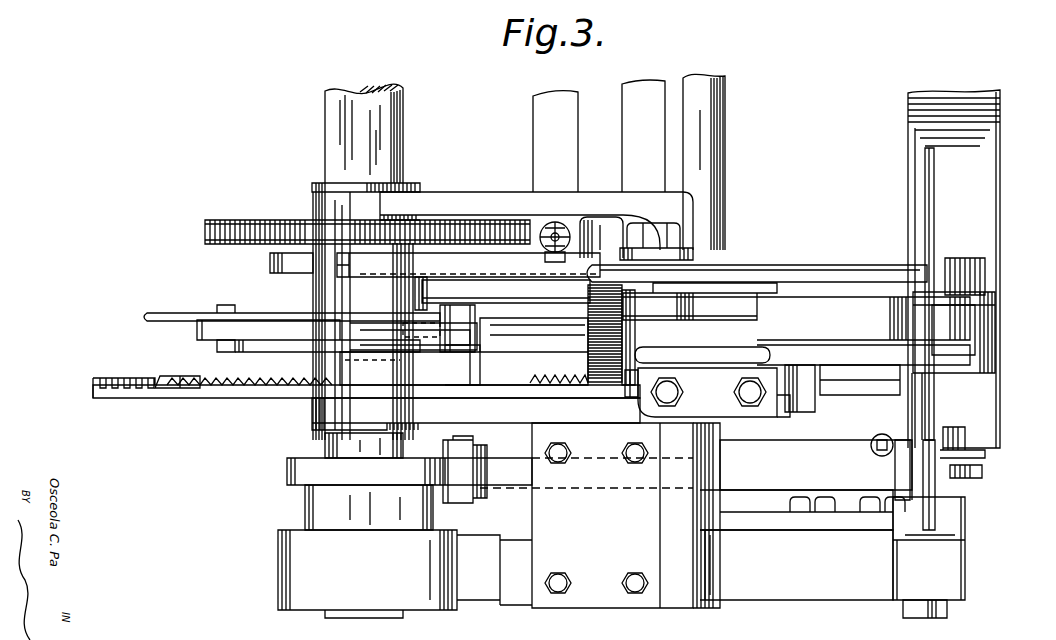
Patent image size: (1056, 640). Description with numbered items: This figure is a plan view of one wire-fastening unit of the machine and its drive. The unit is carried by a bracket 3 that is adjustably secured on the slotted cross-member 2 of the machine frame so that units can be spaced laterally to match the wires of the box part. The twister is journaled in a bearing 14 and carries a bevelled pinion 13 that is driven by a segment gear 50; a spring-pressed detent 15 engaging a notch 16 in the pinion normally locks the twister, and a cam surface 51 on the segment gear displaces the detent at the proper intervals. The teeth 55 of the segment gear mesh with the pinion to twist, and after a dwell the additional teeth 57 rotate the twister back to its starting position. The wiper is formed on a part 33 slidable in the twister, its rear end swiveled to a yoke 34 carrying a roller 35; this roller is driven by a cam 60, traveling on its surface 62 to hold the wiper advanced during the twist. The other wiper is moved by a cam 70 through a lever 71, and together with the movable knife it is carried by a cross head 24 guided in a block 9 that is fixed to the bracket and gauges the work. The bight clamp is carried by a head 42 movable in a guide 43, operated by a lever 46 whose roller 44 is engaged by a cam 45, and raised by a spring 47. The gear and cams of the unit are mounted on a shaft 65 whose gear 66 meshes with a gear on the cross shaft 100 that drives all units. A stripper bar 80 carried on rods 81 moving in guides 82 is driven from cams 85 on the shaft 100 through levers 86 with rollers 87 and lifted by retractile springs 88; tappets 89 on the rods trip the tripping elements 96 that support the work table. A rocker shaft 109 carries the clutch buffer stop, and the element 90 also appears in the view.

The slotted cross-member 2 is at (540, 111).
The bracket 3 is at (468, 202).
The block 9 is at (815, 413).
The bevelled pinion 13 is at (588, 328).
The bearing 14 is at (714, 300).
The spring-pressed detent 15 is at (626, 400).
The notch 16 is at (636, 352).
The cross head 24 is at (862, 378).
The part 33 is at (514, 345).
The yoke 34 is at (455, 355).
The roller 35 is at (428, 355).
The head 42 is at (958, 347).
The guide 43 is at (985, 327).
The roller 44 is at (332, 262).
The cam 45 is at (270, 265).
The lever 46 is at (827, 272).
The spring 47 is at (563, 230).
The segment gear 50 is at (237, 399).
The cam surface 51 is at (93, 397).
The teeth 55 is at (160, 377).
The additional teeth 57 is at (560, 377).
The cam 60 is at (196, 313).
The surface 62 is at (198, 327).
The shaft 65 is at (355, 182).
The gear 66 is at (249, 221).
The cam 70 is at (432, 295).
The lever 71 is at (540, 296).
The stripper bar 80 is at (934, 168).
The rod 81 is at (940, 488).
The guide 82 is at (946, 528).
The cam 85 is at (425, 472).
The lever 86 is at (744, 477).
The roller 87 is at (488, 489).
The retractile spring 88 is at (872, 448).
The tappet 89 is at (982, 471).
The frame 90 is at (985, 183).
The tripping element 96 is at (985, 450).
The shaft 100 is at (398, 145).
The rocker shaft 109 is at (706, 152).